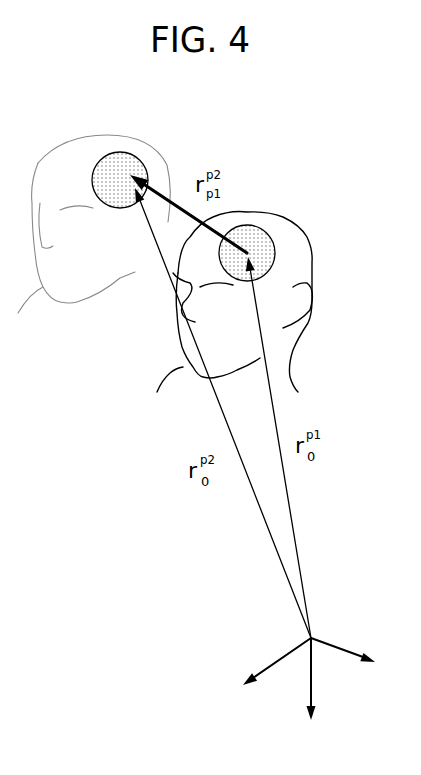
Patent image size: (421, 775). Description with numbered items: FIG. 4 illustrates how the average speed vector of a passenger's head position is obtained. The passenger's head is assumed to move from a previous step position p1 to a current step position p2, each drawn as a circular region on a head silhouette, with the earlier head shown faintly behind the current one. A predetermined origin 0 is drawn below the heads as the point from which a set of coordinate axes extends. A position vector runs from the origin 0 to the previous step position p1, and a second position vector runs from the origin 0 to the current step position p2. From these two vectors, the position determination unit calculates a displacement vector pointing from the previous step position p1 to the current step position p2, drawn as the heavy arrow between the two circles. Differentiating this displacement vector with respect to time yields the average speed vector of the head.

The previous step position p1 is at (248, 253).
The current step position p2 is at (120, 179).
The predetermined origin 0 is at (309, 667).